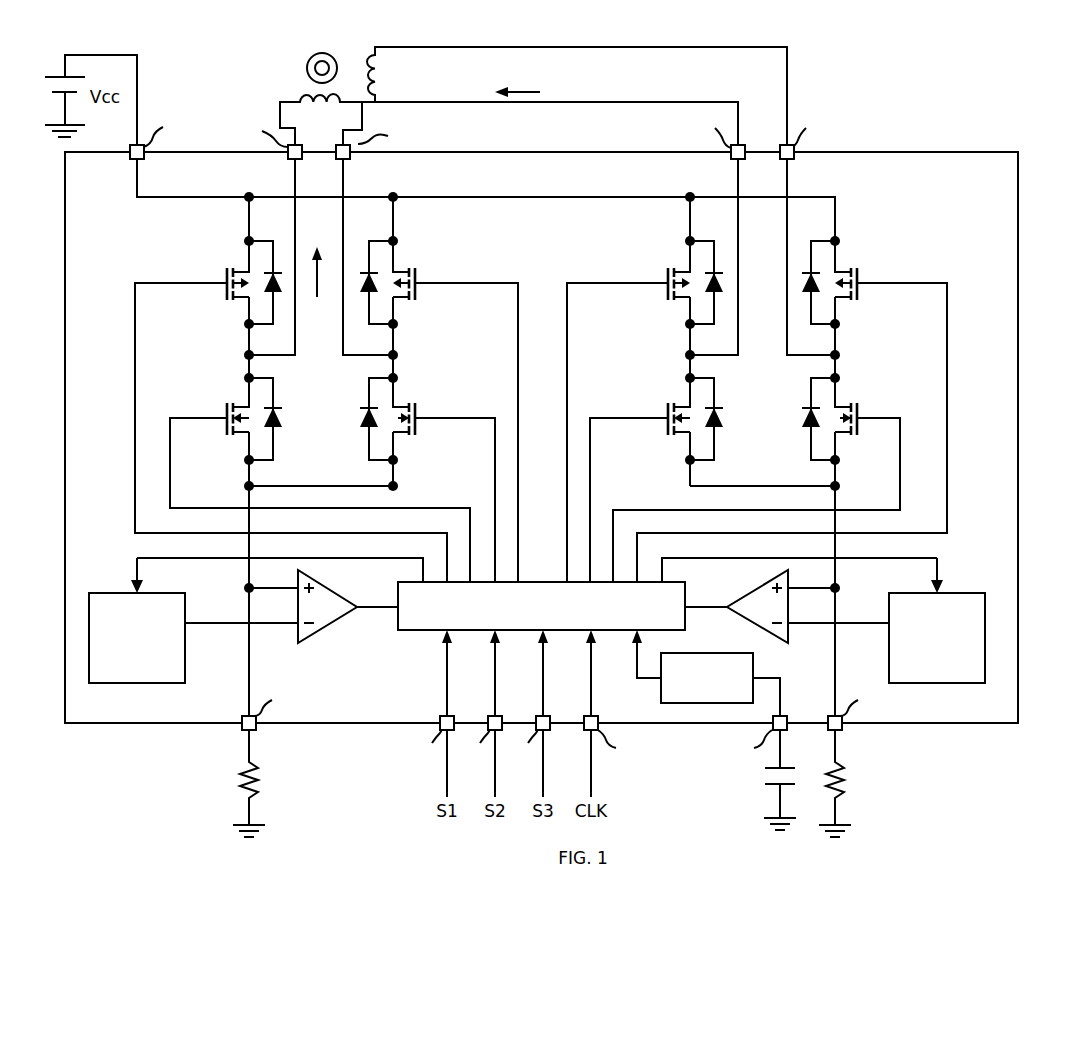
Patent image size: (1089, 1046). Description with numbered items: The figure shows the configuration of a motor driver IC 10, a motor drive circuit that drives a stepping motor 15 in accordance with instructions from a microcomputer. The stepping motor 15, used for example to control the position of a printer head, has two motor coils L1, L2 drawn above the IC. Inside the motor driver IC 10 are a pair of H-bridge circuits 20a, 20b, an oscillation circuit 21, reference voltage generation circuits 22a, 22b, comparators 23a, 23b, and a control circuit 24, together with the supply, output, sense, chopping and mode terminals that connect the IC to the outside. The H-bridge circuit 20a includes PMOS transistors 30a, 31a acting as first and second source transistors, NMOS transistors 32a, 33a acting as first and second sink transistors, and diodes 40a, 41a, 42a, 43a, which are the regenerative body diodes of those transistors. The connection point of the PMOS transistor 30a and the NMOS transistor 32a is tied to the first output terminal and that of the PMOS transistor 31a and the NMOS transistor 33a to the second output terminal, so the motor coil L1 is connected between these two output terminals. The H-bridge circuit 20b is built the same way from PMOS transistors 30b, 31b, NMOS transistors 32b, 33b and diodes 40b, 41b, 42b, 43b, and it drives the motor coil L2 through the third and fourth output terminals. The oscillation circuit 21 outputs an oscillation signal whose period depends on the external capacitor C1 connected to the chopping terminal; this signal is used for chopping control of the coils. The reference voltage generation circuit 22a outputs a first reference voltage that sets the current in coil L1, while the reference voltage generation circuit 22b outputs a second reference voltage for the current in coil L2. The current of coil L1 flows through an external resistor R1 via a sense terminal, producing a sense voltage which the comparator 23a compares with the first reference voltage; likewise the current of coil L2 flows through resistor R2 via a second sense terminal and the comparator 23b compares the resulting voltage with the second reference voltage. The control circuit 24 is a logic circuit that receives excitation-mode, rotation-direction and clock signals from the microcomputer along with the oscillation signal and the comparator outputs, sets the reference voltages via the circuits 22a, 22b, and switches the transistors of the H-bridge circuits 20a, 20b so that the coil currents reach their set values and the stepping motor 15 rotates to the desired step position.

The motor driver IC 10 is at (925, 152).
The stepping motor 15 is at (252, 72).
The motor coil L1 is at (303, 100).
The motor coil L2 is at (382, 70).
The H-bridge circuit 20a is at (462, 268).
The H-bridge circuit 20b is at (905, 268).
The oscillation circuit 21 is at (698, 654).
The reference voltage generation circuit 22a is at (128, 588).
The reference voltage generation circuit 22b is at (953, 588).
The comparator 23a is at (303, 645).
The comparator 23b is at (790, 645).
The control circuit 24 is at (410, 632).
The PMOS transistor 30a is at (238, 300).
The PMOS transistor 31a is at (409, 302).
The NMOS transistor 32a is at (238, 437).
The NMOS transistor 33a is at (413, 437).
The diode 40a is at (268, 268).
The diode 41a is at (369, 268).
The diode 42a is at (278, 429).
The diode 43a is at (368, 413).
The PMOS transistor 30b is at (679, 300).
The PMOS transistor 31b is at (857, 302).
The NMOS transistor 32b is at (679, 437).
The NMOS transistor 33b is at (854, 437).
The diode 40b is at (711, 268).
The diode 41b is at (813, 268).
The diode 42b is at (802, 430).
The diode 43b is at (718, 413).
The resistor R1 is at (264, 771).
The resistor R2 is at (844, 786).
The capacitor C1 is at (772, 790).